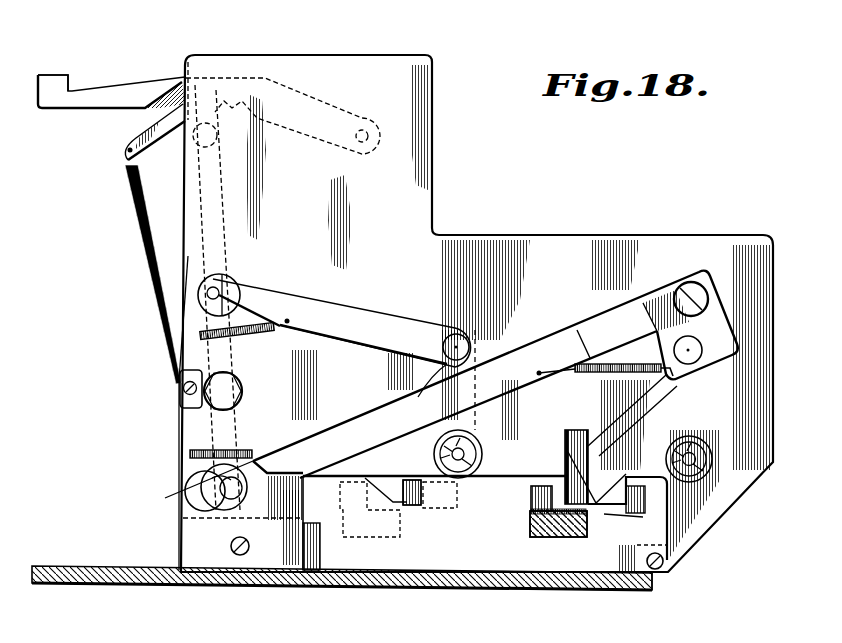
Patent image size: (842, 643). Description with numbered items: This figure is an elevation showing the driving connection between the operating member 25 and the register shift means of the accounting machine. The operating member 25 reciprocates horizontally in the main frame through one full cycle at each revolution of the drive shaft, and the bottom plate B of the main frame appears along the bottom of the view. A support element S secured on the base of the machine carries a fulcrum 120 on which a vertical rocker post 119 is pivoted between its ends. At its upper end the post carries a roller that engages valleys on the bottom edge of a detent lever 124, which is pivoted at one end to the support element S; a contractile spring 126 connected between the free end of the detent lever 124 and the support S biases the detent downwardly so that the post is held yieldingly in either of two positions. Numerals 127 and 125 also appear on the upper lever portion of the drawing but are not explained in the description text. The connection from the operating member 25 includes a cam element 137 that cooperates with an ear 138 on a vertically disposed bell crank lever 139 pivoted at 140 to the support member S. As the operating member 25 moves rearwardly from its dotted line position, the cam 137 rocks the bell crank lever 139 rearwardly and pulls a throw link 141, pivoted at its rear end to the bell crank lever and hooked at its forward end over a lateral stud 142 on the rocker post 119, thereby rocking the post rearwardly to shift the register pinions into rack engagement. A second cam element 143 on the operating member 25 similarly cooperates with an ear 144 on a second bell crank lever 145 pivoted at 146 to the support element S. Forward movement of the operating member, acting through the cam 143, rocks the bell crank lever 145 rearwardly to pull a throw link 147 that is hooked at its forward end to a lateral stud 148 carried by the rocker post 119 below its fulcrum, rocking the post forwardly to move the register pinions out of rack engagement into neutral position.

The support element S is at (410, 182).
The bottom plate B is at (400, 581).
The hook end of lever 127 is at (56, 73).
The lever 125 is at (135, 88).
The detent lever 124 is at (143, 131).
The contractile spring 126 is at (141, 240).
The rocker post 119 is at (218, 236).
The lateral stud 142 is at (196, 302).
The throw link 141 is at (362, 316).
The fulcrum 120 is at (218, 400).
The lateral stud 148 is at (168, 507).
The throw link 147 is at (538, 347).
The bell crank lever 139 is at (524, 399).
The pivot 140 is at (485, 444).
The cam element 137 is at (344, 492).
The ear 138 is at (423, 492).
The second cam element 143 is at (432, 506).
The operating member 25 is at (392, 538).
The ear 144 is at (565, 445).
The second bell crank lever 145 is at (694, 415).
The pivot 146 is at (713, 459).